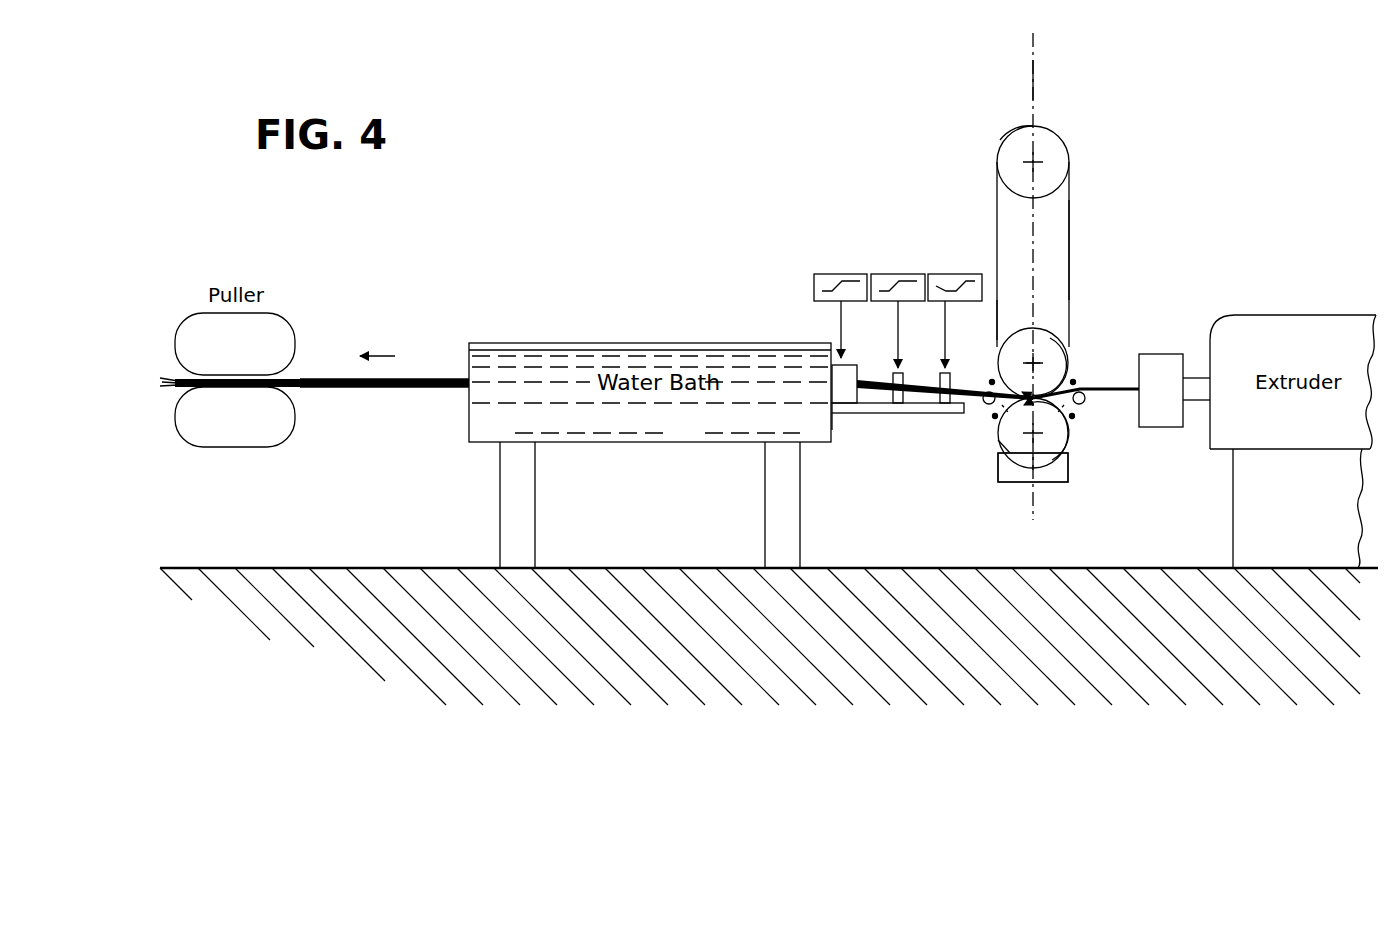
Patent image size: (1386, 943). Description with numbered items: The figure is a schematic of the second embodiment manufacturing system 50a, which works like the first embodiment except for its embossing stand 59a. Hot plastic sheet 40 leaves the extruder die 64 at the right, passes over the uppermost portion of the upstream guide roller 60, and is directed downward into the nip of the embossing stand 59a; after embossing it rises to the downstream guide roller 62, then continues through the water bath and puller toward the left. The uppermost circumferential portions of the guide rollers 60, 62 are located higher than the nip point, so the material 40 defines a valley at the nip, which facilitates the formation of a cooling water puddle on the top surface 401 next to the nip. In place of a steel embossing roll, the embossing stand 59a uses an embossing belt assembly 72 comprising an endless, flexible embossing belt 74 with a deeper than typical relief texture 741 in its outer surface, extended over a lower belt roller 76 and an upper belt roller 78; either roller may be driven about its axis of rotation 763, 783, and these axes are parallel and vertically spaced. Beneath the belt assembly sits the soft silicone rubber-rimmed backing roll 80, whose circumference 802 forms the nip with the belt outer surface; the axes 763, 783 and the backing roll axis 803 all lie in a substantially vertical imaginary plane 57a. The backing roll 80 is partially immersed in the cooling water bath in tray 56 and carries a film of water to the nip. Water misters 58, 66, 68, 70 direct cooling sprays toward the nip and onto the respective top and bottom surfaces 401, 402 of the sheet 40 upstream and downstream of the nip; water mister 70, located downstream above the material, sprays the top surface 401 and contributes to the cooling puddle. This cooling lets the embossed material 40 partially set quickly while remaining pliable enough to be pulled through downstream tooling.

The plastic sheet 40 is at (345, 395).
The top surface 401 is at (428, 373).
The bottom surface 402 is at (430, 395).
The second embodiment manufacturing system 50a is at (712, 212).
The cooling water bath tray 56 is at (1005, 488).
The vertical imaginary plane 57a is at (1033, 57).
The water mister 58 is at (1077, 378).
The embossing stand 59a is at (1043, 100).
The upstream guide roller 60 is at (1082, 405).
The downstream guide roller 62 is at (985, 410).
The extruder die 64 is at (1160, 360).
The water mister 66 is at (1075, 427).
The water mister 68 is at (992, 430).
The water mister 70 is at (988, 378).
The embossing belt assembly 72 is at (1077, 185).
The embossing belt 74 is at (1074, 240).
The lower belt roller 76 is at (1039, 333).
The upper belt roller 78 is at (1016, 130).
The backing roll 80 is at (1053, 458).
The relief texture 741 is at (995, 218).
The axis of rotation 763 is at (1033, 363).
The axis of rotation 783 is at (1033, 162).
The circumference 802 is at (998, 442).
The axis of rotation 803 is at (1037, 440).